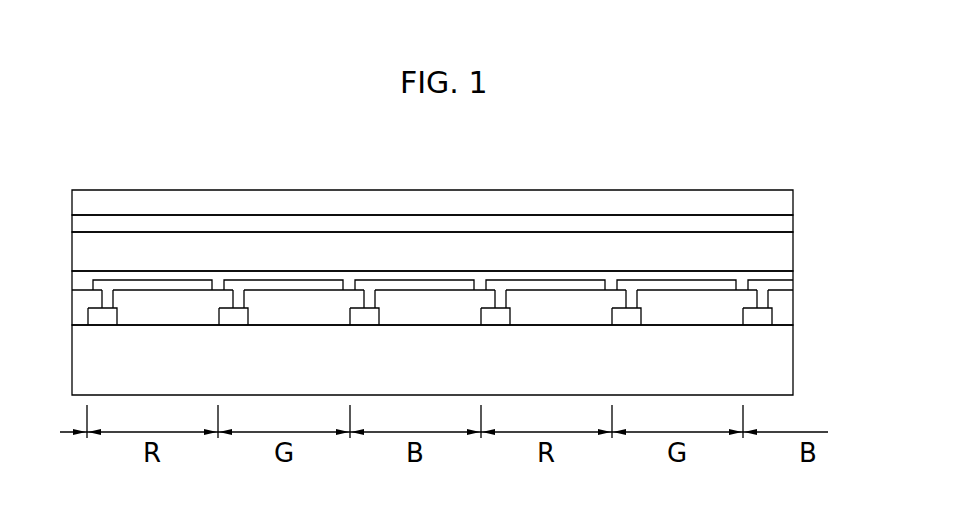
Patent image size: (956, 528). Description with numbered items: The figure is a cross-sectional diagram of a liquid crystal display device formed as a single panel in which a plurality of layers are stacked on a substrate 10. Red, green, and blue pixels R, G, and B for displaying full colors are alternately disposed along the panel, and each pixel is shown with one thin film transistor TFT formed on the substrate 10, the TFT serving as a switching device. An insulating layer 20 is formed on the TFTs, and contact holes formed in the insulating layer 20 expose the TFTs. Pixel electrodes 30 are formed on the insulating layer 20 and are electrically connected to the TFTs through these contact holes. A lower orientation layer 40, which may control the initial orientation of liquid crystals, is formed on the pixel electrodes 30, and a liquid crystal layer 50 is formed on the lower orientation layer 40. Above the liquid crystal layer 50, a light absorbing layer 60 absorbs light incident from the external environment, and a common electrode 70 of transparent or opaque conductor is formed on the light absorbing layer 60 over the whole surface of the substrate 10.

The substrate 10 is at (780, 362).
The insulating layer 20 is at (454, 232).
The pixel electrode 30 is at (678, 277).
The lower orientation layer 40 is at (575, 276).
The liquid crystal layer 50 is at (780, 255).
The light absorbing layer 60 is at (780, 222).
The common electrode 70 is at (780, 197).
The thin film transistor TFT is at (493, 302).